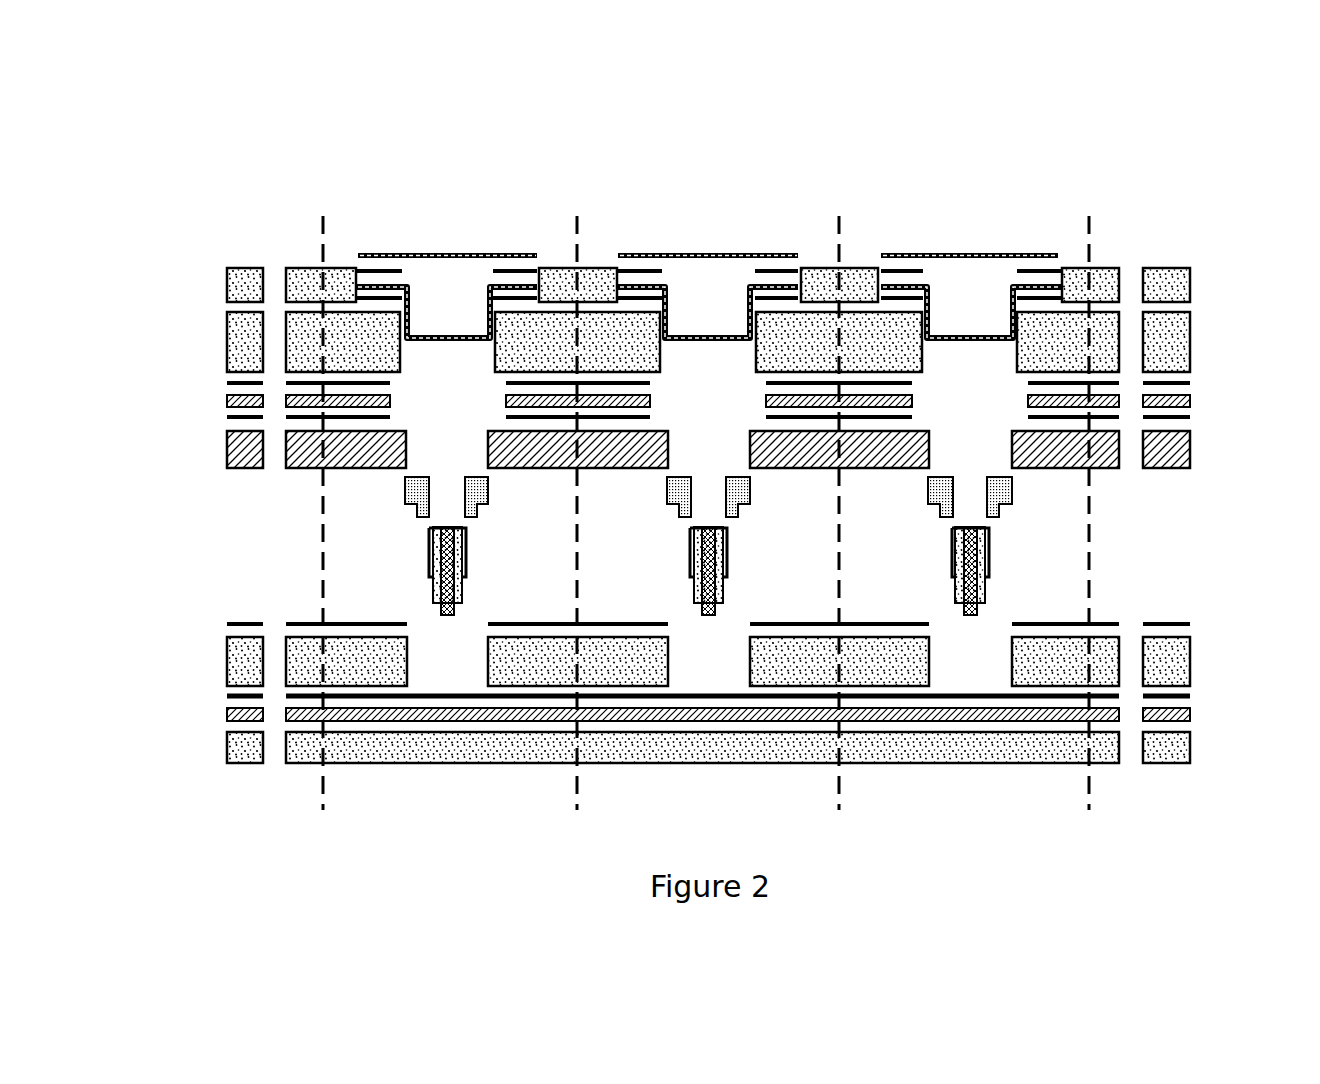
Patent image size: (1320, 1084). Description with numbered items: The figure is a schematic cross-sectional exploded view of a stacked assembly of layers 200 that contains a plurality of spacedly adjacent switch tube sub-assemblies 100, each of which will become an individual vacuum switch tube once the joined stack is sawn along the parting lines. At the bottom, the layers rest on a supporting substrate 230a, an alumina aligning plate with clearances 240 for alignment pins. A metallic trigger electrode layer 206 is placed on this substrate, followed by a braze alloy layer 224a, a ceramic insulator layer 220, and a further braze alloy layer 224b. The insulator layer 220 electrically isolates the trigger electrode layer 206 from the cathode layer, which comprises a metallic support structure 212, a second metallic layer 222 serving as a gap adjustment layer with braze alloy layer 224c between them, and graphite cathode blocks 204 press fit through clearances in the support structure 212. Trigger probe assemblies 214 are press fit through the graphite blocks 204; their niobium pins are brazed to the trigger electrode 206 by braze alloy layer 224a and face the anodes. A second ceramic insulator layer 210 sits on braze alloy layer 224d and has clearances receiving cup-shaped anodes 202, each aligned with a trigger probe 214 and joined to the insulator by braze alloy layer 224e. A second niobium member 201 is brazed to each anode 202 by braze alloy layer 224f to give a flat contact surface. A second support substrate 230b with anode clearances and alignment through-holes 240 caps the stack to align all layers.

The stacked assembly of layers 200 is at (690, 115).
The switch tube sub-assembly 100 is at (970, 153).
The second niobium member 201 is at (967, 242).
The anode 202 is at (993, 326).
The graphite cathode block 204 is at (1028, 498).
The trigger electrode layer 206 is at (1199, 709).
The second ceramic insulator layer 210 is at (1199, 337).
The support structure 212 is at (1199, 440).
The trigger probe assembly 214 is at (1005, 567).
The ceramic insulator layer 220 is at (1199, 652).
The second metallic layer 222 is at (1199, 394).
The braze alloy layer 224a is at (216, 690).
The braze alloy layer 224b is at (216, 620).
The braze alloy layer 224c is at (215, 416).
The braze alloy layer 224d is at (216, 379).
The braze alloy layer 224e is at (890, 296).
The braze alloy layer 224f is at (901, 268).
The supporting substrate 230a is at (1199, 742).
The second support substrate 230b is at (1199, 277).
The alignment through-holes 240 is at (272, 261).